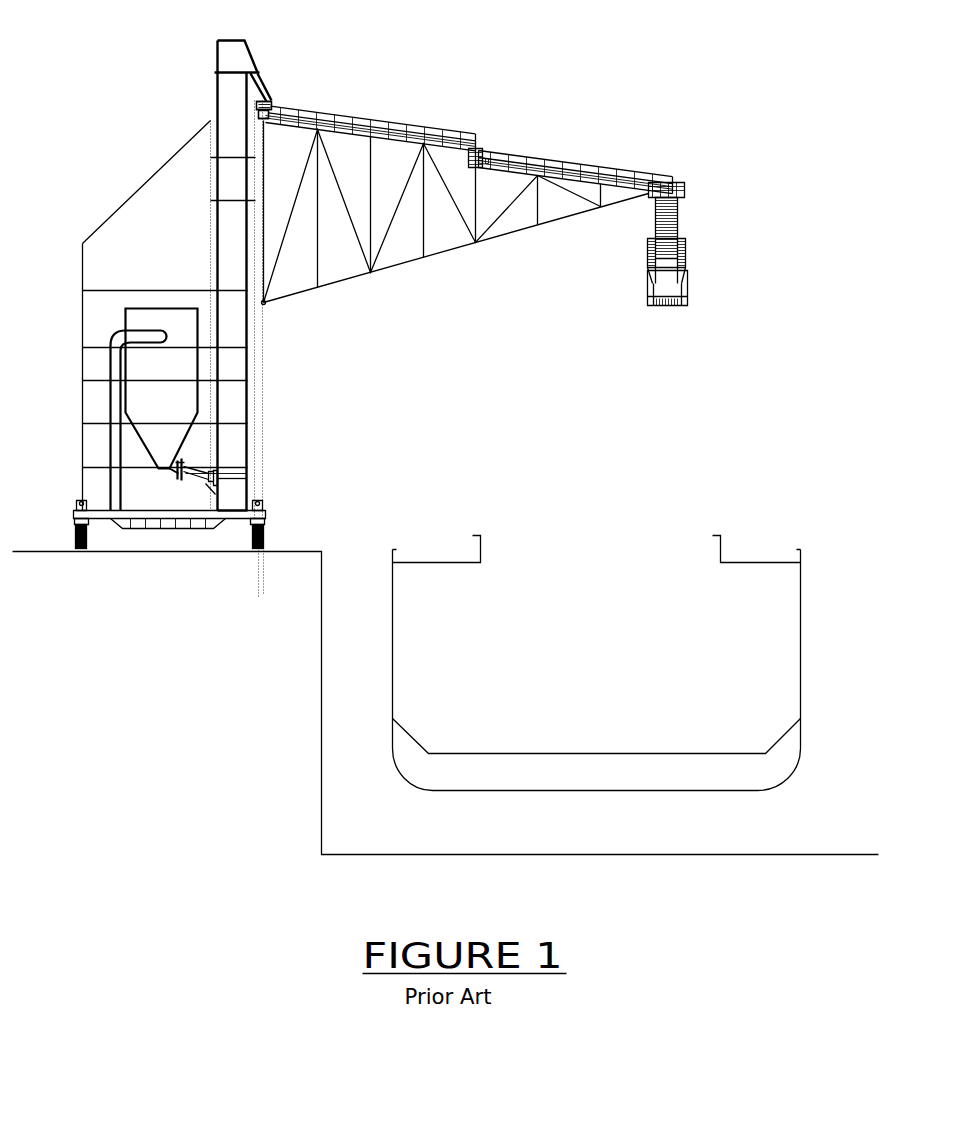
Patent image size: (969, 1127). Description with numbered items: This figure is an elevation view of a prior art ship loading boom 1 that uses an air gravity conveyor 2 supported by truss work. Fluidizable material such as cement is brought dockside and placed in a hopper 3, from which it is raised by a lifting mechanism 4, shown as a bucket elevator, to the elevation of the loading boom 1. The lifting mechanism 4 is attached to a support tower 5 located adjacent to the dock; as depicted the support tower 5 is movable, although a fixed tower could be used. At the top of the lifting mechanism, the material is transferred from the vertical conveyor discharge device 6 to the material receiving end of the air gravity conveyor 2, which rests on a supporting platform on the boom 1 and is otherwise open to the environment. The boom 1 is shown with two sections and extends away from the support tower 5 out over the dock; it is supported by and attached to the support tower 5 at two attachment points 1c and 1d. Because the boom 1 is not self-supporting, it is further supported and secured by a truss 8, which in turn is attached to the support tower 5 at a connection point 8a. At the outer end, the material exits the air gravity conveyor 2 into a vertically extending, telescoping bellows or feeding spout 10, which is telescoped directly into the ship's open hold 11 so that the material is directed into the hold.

The ship loading boom 1 is at (533, 95).
The attachment point 1c is at (270, 101).
The attachment point 1d is at (264, 121).
The air gravity conveyor 2 is at (356, 122).
The hopper 3 is at (123, 322).
The lifting mechanism 4 is at (241, 492).
The support tower 5 is at (145, 217).
The vertical conveyor discharge device 6 is at (237, 47).
The truss 8 is at (511, 236).
The connection point 8a is at (266, 304).
The telescoping bellows/feeding spout 10 is at (688, 263).
The ship's open hold 11 is at (802, 618).